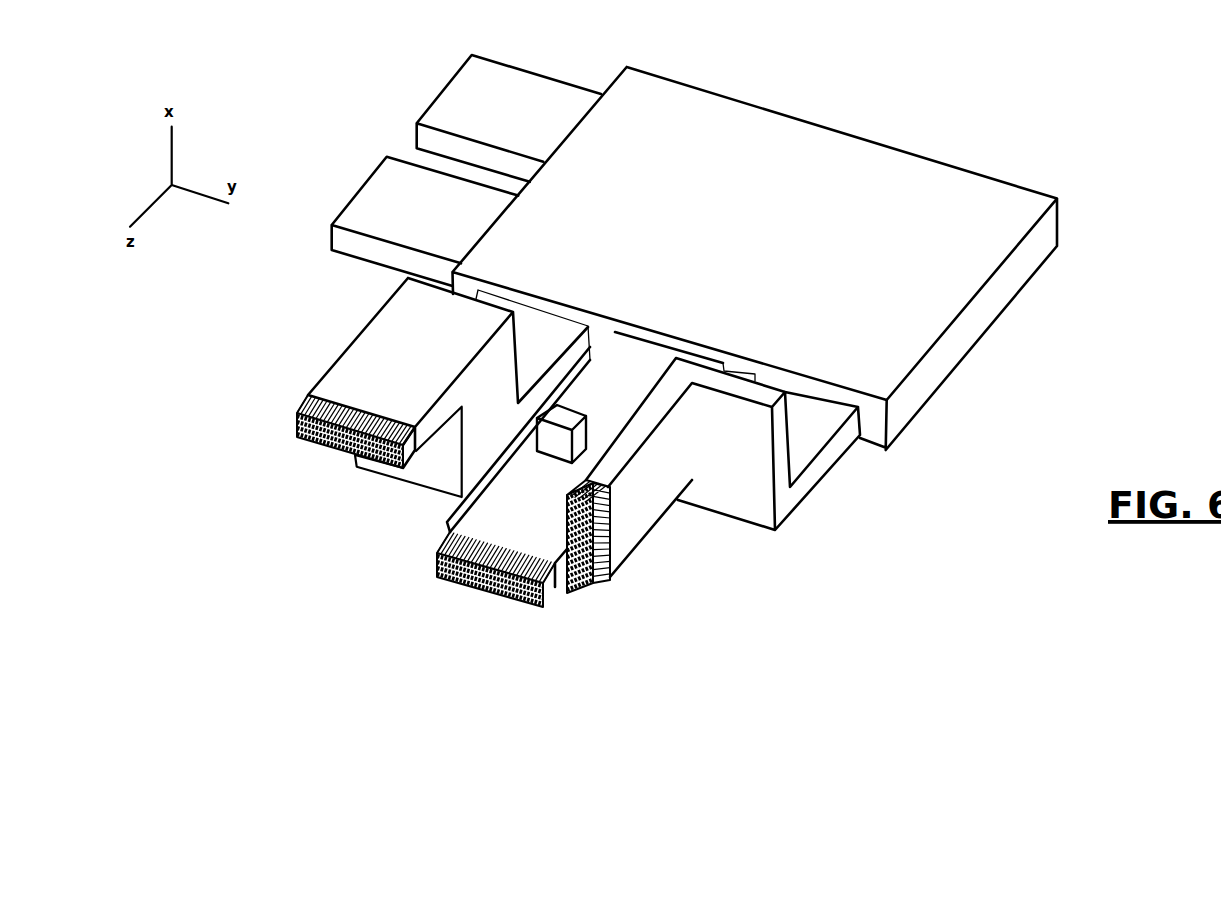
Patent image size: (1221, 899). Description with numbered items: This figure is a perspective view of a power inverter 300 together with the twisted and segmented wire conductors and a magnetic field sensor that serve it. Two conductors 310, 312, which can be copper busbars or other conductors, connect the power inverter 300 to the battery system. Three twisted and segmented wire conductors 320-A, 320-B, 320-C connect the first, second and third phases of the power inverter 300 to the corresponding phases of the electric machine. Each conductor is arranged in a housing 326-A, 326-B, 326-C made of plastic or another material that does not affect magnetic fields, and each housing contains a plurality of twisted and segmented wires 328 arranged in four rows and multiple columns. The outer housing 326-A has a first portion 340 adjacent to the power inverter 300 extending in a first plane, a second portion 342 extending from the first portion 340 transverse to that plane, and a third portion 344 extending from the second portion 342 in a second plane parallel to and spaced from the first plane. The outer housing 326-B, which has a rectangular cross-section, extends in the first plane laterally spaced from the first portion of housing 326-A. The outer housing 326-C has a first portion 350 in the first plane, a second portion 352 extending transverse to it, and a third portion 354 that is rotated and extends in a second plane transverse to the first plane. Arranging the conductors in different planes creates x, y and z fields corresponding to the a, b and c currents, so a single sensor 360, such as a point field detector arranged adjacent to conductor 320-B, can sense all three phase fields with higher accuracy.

The power inverter 300 is at (876, 153).
The conductor 310 is at (533, 90).
The conductor 312 is at (383, 198).
The twisted and segmented wire conductor 320-A is at (449, 405).
The twisted and segmented wire conductor 320-B is at (586, 459).
The twisted and segmented wire conductor 320-C is at (723, 467).
The outer housing 326-A is at (382, 478).
The outer housing 326-B is at (452, 525).
The outer housing 326-C is at (798, 488).
The twisted and segmented wires 328 is at (296, 440).
The first portion 340 is at (553, 364).
The second portion 342 is at (485, 449).
The third portion 344 is at (459, 299).
The first portion 350 is at (824, 447).
The second portion 352 is at (726, 456).
The third portion 354 is at (650, 480).
The sensor 360 is at (576, 416).